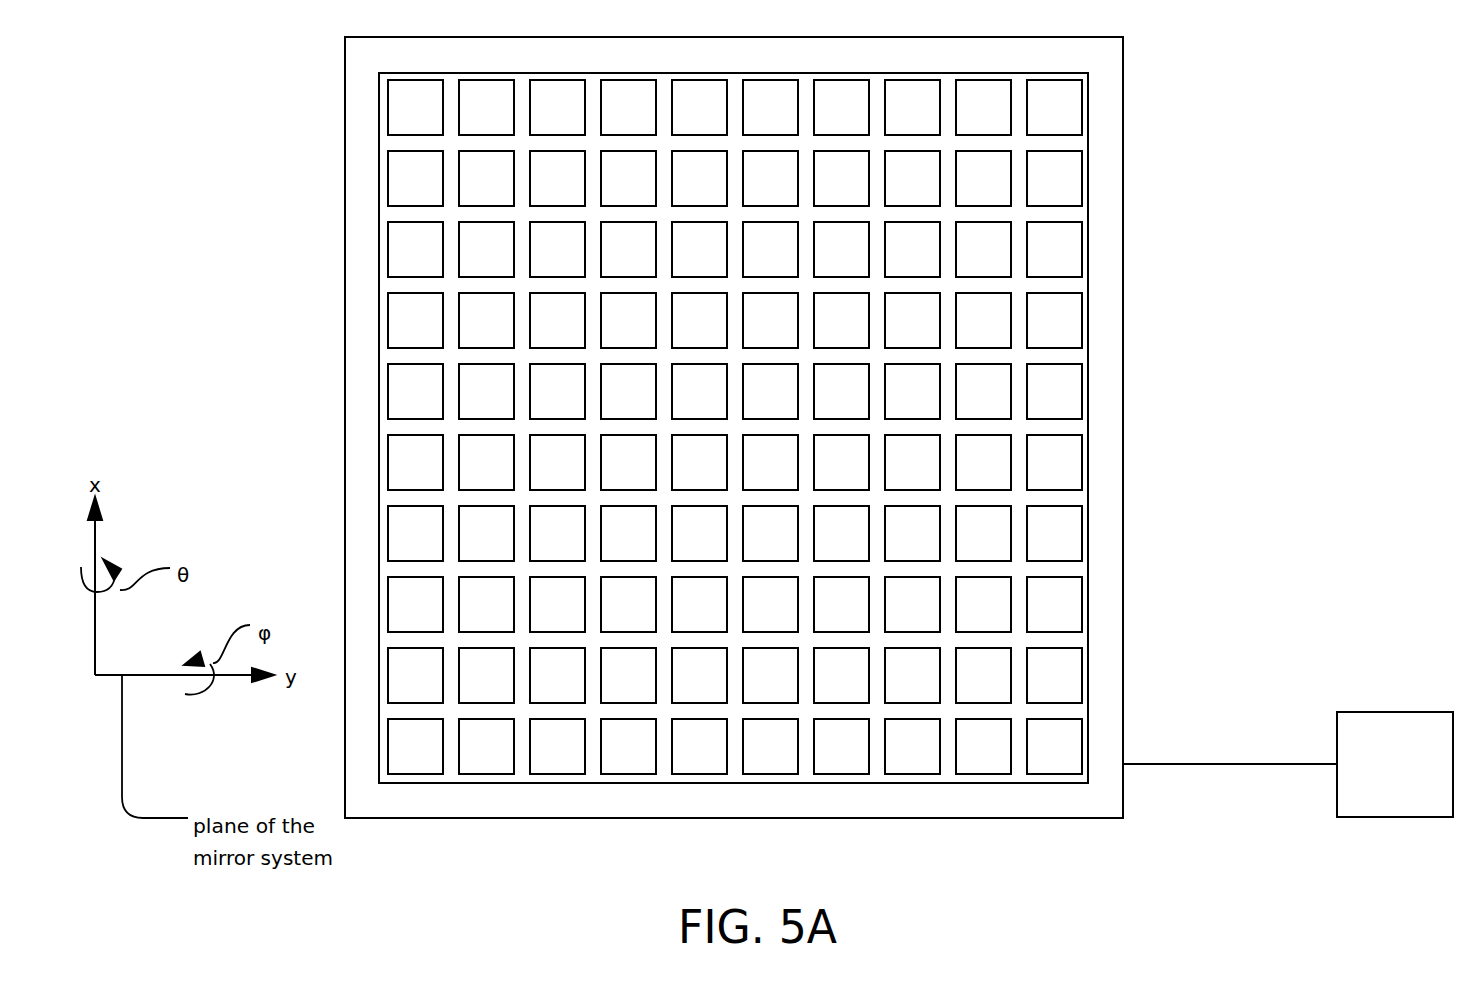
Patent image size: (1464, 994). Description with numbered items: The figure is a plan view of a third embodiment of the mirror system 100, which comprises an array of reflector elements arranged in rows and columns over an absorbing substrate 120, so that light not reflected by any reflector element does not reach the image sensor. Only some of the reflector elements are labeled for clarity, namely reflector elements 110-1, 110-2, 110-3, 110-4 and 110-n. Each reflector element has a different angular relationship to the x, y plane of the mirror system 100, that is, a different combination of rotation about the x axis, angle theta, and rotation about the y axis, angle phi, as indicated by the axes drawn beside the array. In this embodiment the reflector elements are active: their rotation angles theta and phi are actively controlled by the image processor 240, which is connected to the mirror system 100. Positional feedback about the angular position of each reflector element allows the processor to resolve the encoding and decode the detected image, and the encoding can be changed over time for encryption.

The mirror system 100 is at (1132, 198).
The absorbing substrate 120 is at (1104, 133).
The reflector element 110-1 is at (1065, 462).
The reflector element 110-2 is at (1063, 537).
The reflector element 110-3 is at (981, 599).
The reflector element 110-4 is at (1068, 617).
The reflector element 110-n is at (1065, 673).
The image processor 240 is at (1288, 764).